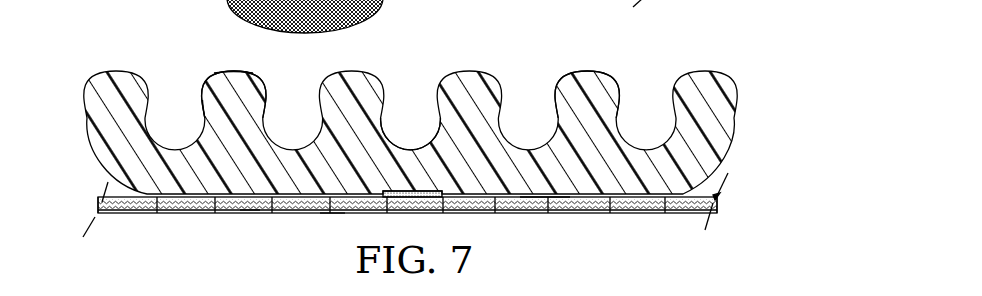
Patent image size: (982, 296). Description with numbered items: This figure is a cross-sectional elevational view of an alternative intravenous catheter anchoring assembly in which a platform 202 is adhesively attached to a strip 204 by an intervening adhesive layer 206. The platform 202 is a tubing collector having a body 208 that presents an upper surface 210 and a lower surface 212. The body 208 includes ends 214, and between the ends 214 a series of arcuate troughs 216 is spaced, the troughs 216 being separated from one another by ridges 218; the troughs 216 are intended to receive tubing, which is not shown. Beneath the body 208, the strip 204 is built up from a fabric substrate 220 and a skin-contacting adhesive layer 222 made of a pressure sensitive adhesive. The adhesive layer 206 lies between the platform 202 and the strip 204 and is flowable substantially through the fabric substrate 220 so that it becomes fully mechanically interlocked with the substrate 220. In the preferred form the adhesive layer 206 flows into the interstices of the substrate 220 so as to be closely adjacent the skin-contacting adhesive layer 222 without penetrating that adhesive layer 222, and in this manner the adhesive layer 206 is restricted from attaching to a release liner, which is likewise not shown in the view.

The ends 214 is at (81, 61).
The platform 202 is at (243, 80).
The ridges 218 is at (217, 73).
The arcuate troughs 216 is at (205, 115).
The upper surface 210 is at (408, 144).
The body 208 is at (607, 77).
The strip 204 is at (210, 215).
The fabric substrate 220 is at (257, 212).
The skin-contacting adhesive layer 222 is at (333, 214).
The lower surface 212 is at (542, 198).
The adhesive layer 206 is at (685, 212).